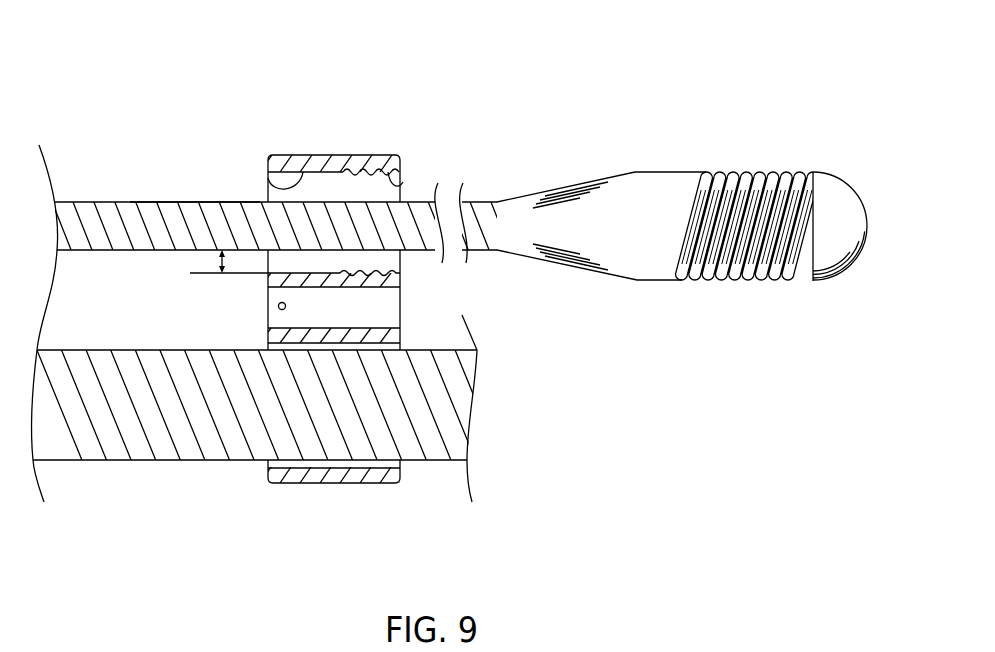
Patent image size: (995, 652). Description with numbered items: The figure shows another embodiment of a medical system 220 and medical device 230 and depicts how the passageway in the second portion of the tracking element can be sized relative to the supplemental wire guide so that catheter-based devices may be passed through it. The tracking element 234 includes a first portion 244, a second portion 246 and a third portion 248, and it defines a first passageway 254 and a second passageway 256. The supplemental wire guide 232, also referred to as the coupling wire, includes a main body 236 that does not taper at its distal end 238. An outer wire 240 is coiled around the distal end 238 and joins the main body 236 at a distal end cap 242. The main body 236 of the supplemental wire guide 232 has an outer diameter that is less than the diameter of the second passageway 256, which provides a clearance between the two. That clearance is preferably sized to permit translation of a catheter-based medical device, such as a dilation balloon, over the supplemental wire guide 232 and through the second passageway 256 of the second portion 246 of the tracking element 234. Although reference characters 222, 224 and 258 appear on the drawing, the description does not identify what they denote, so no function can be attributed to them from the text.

The medical system 220 is at (113, 86).
The housing 222 is at (118, 460).
The bore 224 is at (165, 452).
The medical device 230 is at (300, 74).
The supplemental wire guide 232 is at (117, 202).
The tracking element 234 is at (292, 155).
The main body 236 is at (203, 202).
The distal end 238 is at (660, 170).
The outer wire 240 is at (747, 170).
The distal end cap 242 is at (828, 185).
The first portion 244 is at (322, 480).
The second portion 246 is at (356, 160).
The third portion 248 is at (392, 308).
The first passageway 254 is at (268, 347).
The second passageway 256 is at (268, 178).
The weld joint 258 is at (403, 182).